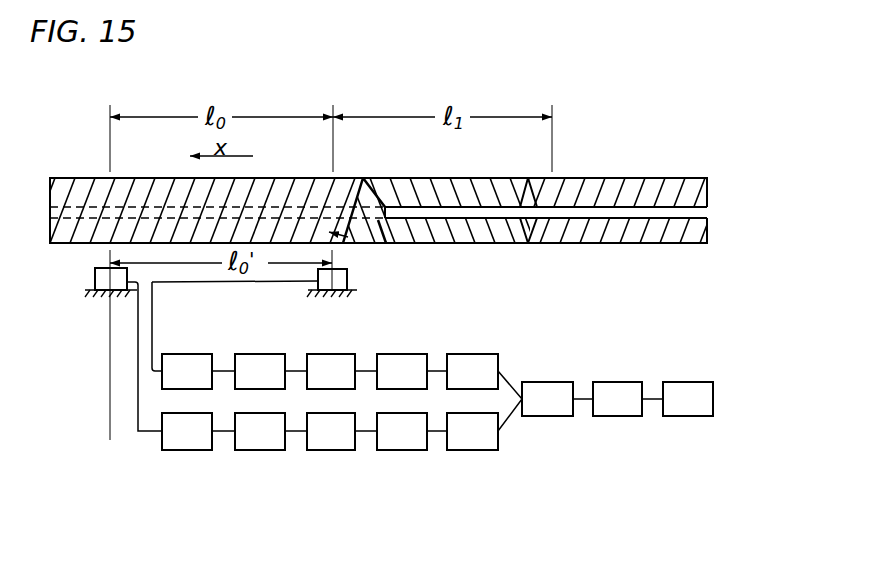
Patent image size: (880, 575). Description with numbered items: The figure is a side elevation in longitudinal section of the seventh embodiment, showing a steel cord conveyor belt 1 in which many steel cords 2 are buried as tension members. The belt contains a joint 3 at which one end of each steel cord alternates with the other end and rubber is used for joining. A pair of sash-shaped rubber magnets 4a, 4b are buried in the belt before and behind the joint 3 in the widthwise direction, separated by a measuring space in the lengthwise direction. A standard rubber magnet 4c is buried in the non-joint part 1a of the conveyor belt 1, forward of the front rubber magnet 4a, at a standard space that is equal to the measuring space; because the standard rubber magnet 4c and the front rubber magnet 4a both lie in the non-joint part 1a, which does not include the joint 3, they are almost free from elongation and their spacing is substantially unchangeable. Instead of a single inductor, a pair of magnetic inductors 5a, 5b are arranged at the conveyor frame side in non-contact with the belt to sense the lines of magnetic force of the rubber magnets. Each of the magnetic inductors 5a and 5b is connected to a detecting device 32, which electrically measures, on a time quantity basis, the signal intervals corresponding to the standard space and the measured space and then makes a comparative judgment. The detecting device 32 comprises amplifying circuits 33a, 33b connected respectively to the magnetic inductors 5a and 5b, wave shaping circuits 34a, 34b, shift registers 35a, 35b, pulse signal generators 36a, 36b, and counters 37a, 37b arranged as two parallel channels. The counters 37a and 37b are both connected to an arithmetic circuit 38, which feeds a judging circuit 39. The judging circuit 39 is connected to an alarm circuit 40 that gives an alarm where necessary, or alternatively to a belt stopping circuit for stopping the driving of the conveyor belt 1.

The steel cord conveyor belt 1 is at (600, 178).
The non-joint part 1a is at (127, 183).
The steel cord 2 is at (660, 213).
The joint 3 is at (443, 182).
The front rubber magnet 4a is at (364, 222).
The rear rubber magnet 4b is at (548, 230).
The standard rubber magnet 4c is at (110, 232).
The magnetic inductor 5a is at (95, 282).
The magnetic inductor 5b is at (347, 277).
The detecting device 32 is at (357, 452).
The amplifying circuit 33a is at (187, 431).
The amplifying circuit 33b is at (187, 371).
The wave shaping circuit 34a is at (260, 431).
The wave shaping circuit 34b is at (260, 371).
The shift register 35a is at (331, 431).
The shift register 35b is at (331, 371).
The pulse signal generator 36a is at (402, 431).
The pulse signal generator 36b is at (402, 371).
The counter 37a is at (472, 431).
The counter 37b is at (472, 371).
The arithmetic circuit 38 is at (547, 399).
The judging circuit 39 is at (617, 399).
The alarm circuit 40 is at (688, 399).